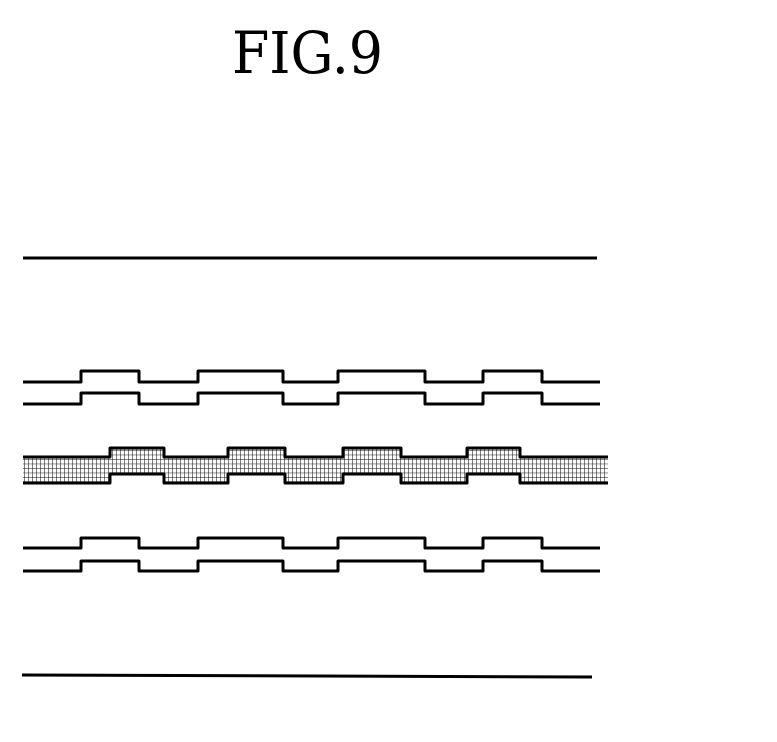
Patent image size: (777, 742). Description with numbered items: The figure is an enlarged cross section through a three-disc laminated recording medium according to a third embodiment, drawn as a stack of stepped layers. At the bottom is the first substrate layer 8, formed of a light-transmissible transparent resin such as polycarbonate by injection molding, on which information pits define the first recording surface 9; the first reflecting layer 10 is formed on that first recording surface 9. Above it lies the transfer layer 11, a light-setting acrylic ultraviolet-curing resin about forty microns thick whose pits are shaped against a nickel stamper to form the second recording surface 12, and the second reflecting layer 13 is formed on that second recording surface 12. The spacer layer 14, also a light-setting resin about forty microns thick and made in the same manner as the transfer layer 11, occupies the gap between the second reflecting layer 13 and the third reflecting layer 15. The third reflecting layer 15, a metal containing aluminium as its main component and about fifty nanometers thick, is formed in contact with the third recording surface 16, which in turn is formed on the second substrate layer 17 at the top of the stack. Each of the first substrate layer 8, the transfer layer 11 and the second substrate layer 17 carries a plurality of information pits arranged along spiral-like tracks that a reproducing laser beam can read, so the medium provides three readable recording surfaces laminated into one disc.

The first substrate layer 8 is at (550, 615).
The first recording surface 9 is at (565, 573).
The first reflecting layer 10 is at (573, 560).
The transfer layer 11 is at (572, 510).
The second recording surface 12 is at (592, 485).
The second reflecting layer 13 is at (565, 472).
The spacer layer 14 is at (565, 430).
The third reflecting layer 15 is at (575, 395).
The third recording surface 16 is at (572, 382).
The second substrate layer 17 is at (548, 316).